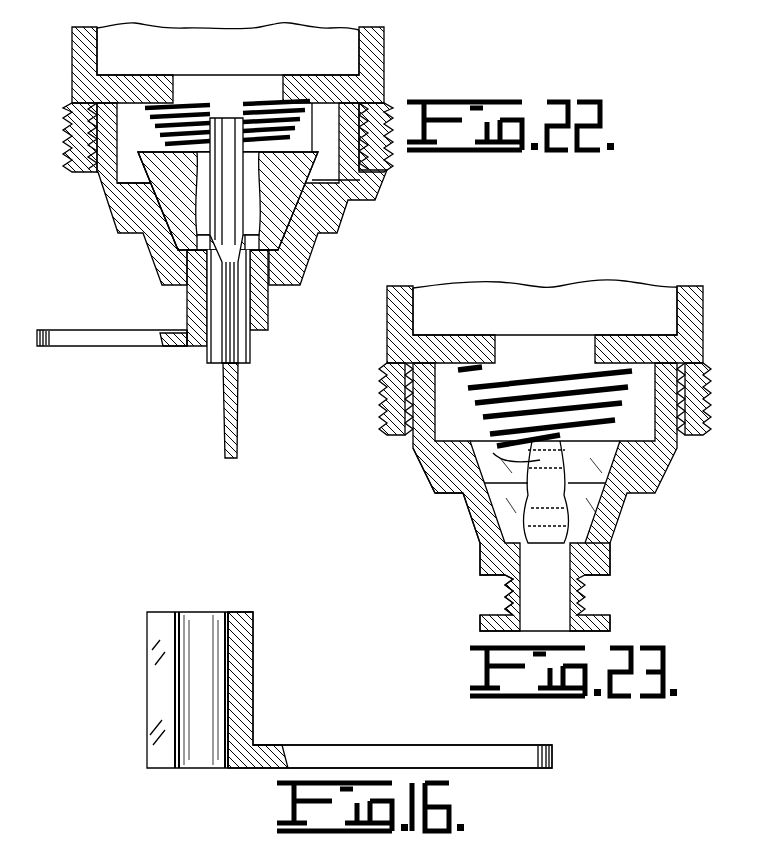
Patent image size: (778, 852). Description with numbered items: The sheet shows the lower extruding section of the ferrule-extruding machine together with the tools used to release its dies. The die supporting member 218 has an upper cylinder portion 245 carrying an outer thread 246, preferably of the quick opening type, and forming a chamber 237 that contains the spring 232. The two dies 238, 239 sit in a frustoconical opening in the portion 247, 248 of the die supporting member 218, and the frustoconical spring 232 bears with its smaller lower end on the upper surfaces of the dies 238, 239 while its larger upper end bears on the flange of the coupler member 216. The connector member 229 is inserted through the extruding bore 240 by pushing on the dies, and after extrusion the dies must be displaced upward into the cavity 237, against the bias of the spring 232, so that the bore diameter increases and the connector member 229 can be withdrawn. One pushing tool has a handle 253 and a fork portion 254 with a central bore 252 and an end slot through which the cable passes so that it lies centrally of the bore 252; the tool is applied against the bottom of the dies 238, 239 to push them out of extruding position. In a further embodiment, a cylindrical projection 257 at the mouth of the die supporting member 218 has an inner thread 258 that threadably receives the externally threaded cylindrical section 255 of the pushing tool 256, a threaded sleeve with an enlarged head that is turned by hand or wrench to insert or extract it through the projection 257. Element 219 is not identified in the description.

In FIG. 22, the coupler member 216 is at (388, 42).
In FIG. 23, the coupler member 216 is at (635, 300).
In FIG. 22, the die supporting member 218 is at (340, 203).
In FIG. 23, the die supporting member 218 is at (667, 465).
In FIG. 22, the needle pin 219 is at (229, 434).
In FIG. 22, the connector member 229 is at (272, 232).
In FIG. 22, the spring 232 is at (199, 108).
In FIG. 23, the spring 232 is at (537, 384).
In FIG. 22, the chamber 237 is at (322, 117).
In FIG. 22, the die 238 is at (170, 210).
In FIG. 22, the die 239 is at (300, 210).
In FIG. 23, the die 239 is at (588, 508).
In FIG. 23, the extruding bore 240 is at (493, 457).
In FIG. 23, the upper cylinder portion 245 is at (425, 404).
In FIG. 23, the outer thread 246 is at (682, 392).
In FIG. 23, the portion of the die supporting member 247 is at (437, 472).
In FIG. 23, the portion of the die supporting member 248 is at (477, 514).
In FIG. 22, the central bore 252 is at (252, 336).
In FIG. 16, the central bore 252 is at (202, 622).
In FIG. 22, the handle 253 is at (76, 332).
In FIG. 16, the handle 253 is at (370, 753).
In FIG. 22, the fork portion 254 is at (192, 299).
In FIG. 16, the fork portion 254 is at (245, 665).
In FIG. 23, the externally threaded cylindrical section 255 is at (503, 590).
In FIG. 23, the pushing tool 256 is at (602, 617).
In FIG. 23, the cylindrical projection 257 is at (612, 569).
In FIG. 23, the inner thread 258 is at (505, 557).